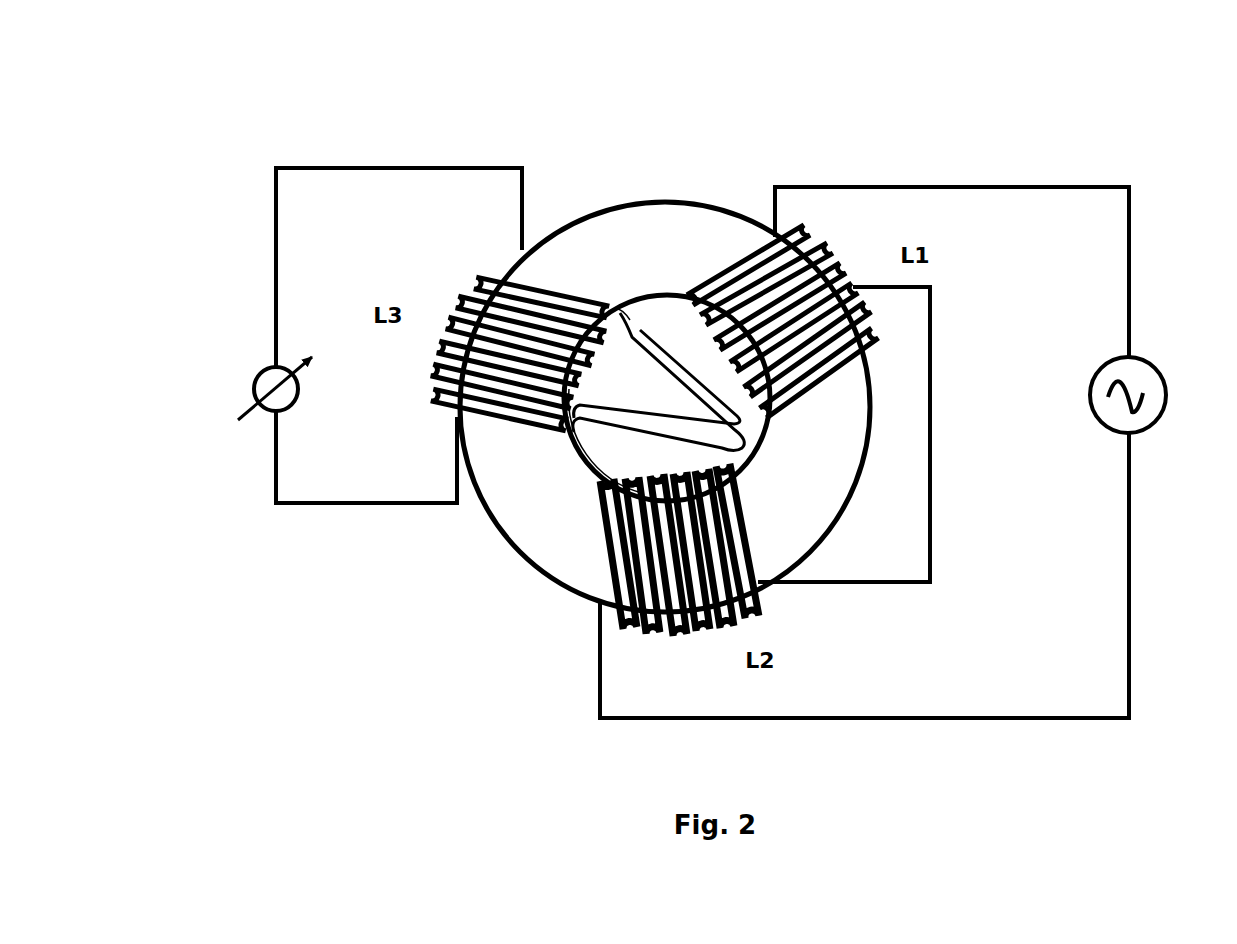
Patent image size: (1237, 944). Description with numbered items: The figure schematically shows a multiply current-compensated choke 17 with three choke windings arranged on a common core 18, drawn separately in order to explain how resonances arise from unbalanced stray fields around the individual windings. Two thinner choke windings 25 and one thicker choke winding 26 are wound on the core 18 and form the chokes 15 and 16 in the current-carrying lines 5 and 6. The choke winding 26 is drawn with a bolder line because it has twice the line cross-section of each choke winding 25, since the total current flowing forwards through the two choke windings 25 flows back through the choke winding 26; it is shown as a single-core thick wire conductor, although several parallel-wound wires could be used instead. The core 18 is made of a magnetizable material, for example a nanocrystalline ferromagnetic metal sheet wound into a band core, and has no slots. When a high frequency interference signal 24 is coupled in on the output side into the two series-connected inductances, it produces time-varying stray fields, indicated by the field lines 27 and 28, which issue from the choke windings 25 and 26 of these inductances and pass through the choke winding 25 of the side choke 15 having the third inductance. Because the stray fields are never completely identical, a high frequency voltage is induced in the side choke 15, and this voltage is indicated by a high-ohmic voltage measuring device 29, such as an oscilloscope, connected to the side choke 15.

The current-carrying line 5 is at (452, 167).
The current-carrying line 6 is at (857, 720).
The choke 15 is at (618, 323).
The choke 16 is at (630, 616).
The current-compensated choke 17 is at (665, 368).
The common core 18 is at (570, 545).
The interference signal 24 is at (1162, 368).
The choke winding 25 is at (487, 290).
The choke winding 26 is at (657, 640).
The field line 27 is at (660, 328).
The field line 28 is at (597, 463).
The voltage measuring device 29 is at (265, 410).